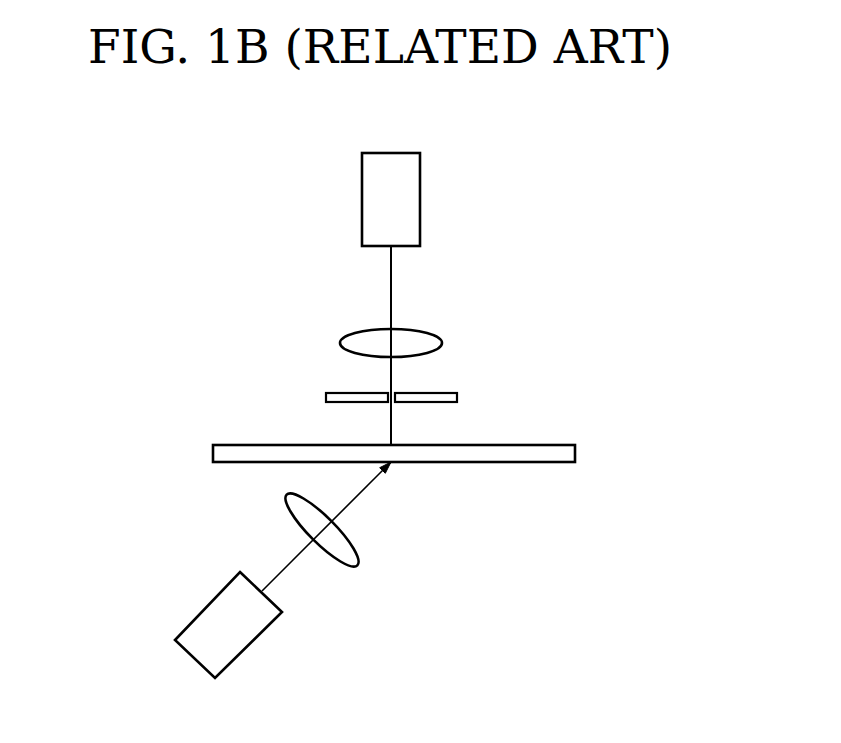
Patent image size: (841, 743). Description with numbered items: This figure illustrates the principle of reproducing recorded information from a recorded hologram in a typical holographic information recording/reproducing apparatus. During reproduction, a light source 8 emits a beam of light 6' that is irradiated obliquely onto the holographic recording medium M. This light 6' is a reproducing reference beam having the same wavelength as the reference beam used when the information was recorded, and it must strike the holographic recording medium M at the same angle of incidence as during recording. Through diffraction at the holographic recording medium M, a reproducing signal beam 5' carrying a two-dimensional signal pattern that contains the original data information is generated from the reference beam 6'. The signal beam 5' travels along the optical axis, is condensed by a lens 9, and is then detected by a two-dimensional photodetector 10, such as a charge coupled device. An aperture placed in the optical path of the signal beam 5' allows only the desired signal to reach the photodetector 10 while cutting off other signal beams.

The two-dimensional photodetector 10 is at (420, 198).
The reproducing signal beam 5' is at (431, 287).
The lens 9 is at (442, 343).
The holographic recording medium M is at (575, 453).
The reproducing reference beam 6' is at (342, 526).
The light source 8 is at (205, 603).